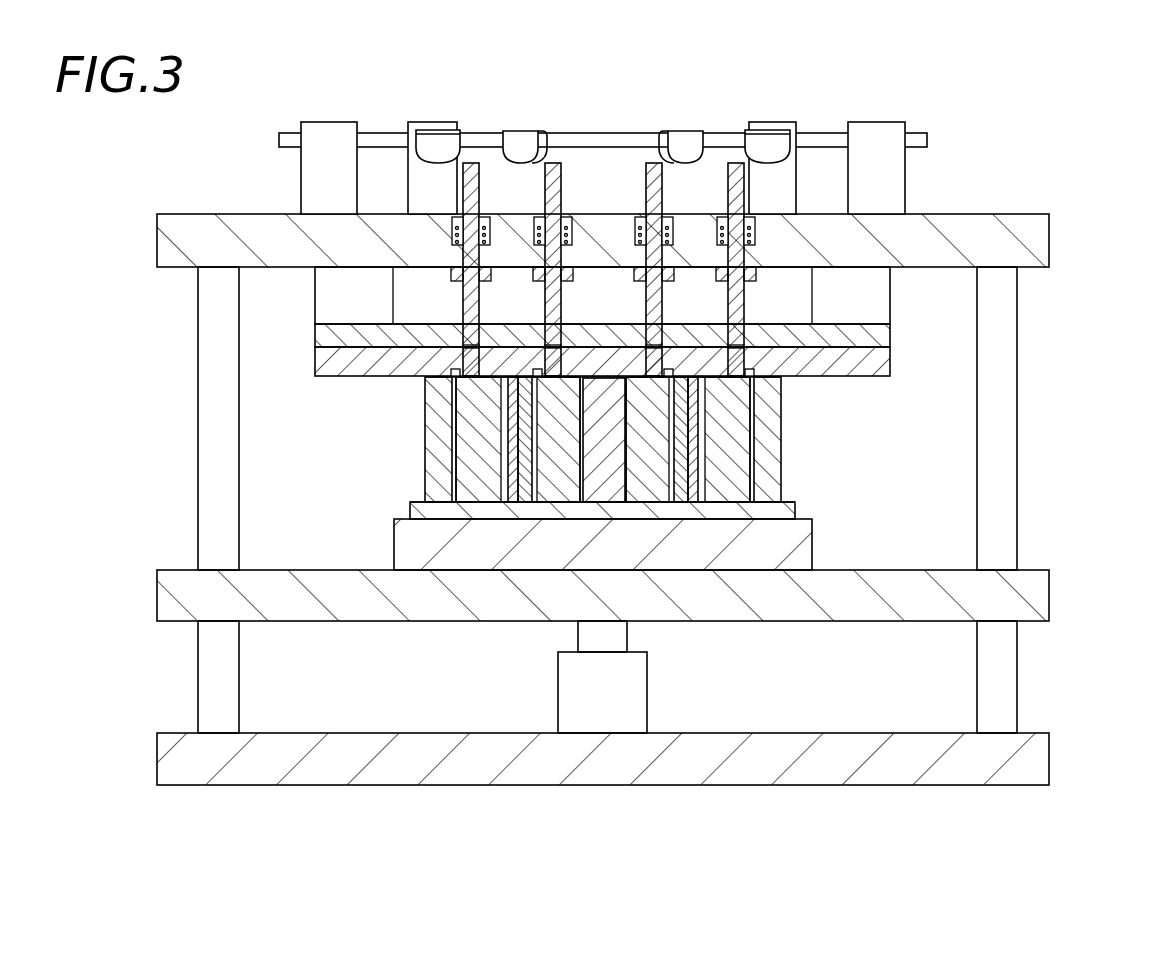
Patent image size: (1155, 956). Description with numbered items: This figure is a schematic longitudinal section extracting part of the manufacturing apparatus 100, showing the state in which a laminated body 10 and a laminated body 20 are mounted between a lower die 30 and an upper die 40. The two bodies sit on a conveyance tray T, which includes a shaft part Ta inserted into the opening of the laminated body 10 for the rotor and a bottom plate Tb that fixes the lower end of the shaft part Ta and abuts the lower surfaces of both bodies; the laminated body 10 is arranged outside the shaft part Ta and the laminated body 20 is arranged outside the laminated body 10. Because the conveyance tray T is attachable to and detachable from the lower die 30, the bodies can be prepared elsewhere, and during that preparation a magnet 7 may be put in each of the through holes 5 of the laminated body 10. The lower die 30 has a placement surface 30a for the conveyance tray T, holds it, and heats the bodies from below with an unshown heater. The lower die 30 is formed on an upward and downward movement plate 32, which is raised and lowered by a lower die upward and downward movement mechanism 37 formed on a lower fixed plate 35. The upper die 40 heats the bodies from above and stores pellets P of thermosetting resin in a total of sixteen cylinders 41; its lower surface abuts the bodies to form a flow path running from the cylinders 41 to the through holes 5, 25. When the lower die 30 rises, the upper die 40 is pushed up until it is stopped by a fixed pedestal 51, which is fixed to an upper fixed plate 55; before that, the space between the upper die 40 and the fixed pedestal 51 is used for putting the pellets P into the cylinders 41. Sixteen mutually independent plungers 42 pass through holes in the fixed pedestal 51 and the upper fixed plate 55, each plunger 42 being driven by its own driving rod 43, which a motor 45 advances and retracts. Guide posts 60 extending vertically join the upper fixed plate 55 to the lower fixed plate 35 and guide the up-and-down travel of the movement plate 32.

The manufacturing apparatus 100 is at (1070, 104).
The upper fixed plate 55 is at (1037, 242).
The guide posts 60 is at (215, 397).
The upward and downward movement plate 32 is at (1037, 593).
The lower fixed plate 35 is at (1037, 770).
The lower die upward and downward movement mechanism 37 is at (632, 695).
The lower die 30 is at (812, 548).
The placement surface 30a is at (768, 512).
The conveyance tray T is at (327, 457).
The shaft part Ta is at (593, 460).
The bottom plate Tb is at (422, 513).
The through holes 25 is at (452, 435).
The laminated body 20 is at (478, 492).
The through holes 5 is at (515, 492).
The magnet 7 is at (527, 412).
The laminated body 10 is at (578, 492).
The fixed pedestal 51 is at (887, 333).
The upper die 40 is at (887, 360).
The cylinders 41 is at (450, 358).
The pellets P is at (468, 343).
The driving rods 43 is at (385, 133).
The motors 45 is at (328, 135).
The plungers 42 is at (470, 158).